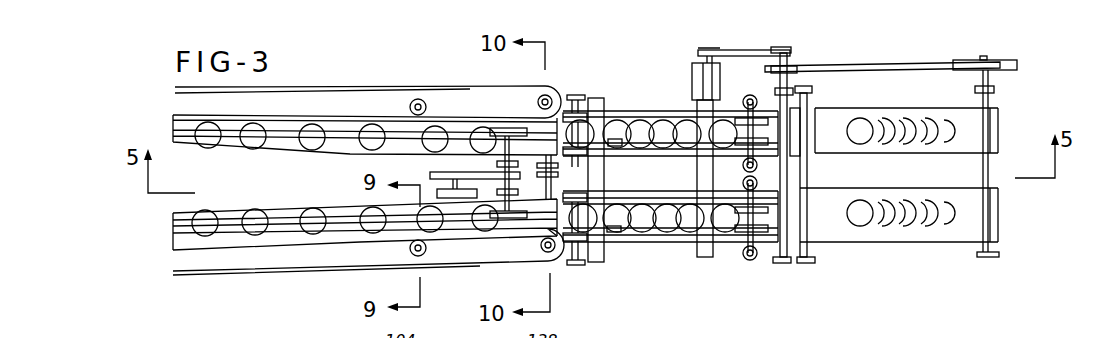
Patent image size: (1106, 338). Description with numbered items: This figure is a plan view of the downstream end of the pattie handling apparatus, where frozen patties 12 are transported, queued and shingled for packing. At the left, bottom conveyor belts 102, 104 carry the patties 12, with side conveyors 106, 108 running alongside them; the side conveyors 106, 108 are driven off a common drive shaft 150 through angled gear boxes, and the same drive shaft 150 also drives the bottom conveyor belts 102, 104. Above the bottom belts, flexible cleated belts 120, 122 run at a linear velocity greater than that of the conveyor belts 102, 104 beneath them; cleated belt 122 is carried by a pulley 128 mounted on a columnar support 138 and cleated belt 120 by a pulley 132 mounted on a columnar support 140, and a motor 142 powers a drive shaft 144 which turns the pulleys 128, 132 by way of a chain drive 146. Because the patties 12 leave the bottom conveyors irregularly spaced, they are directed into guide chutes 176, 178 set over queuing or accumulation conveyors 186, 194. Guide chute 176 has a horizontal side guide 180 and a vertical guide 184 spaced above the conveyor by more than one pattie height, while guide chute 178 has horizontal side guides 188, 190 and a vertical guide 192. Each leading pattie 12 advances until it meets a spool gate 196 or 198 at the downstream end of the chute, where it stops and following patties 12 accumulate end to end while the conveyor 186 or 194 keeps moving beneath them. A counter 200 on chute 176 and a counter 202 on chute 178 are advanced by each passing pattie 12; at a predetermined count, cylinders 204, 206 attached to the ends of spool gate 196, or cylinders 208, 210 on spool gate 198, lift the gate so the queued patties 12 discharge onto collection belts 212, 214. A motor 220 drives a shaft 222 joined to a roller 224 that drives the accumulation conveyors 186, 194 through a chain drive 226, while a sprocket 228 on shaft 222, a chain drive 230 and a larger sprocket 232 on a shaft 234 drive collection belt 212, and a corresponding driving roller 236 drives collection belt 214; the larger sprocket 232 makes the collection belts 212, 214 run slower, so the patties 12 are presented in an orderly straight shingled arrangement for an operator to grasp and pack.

The patties 12 is at (352, 211).
The conveyor belt 102 is at (288, 147).
The conveyor belt 104 is at (283, 217).
The side conveyor 106 is at (343, 87).
The side conveyor 108 is at (340, 247).
The cleated belt 120 is at (352, 132).
The cleated belt 122 is at (400, 230).
The pulley 128 is at (515, 240).
The pulley 132 is at (527, 130).
The columnar support 138 is at (515, 195).
The columnar support 140 is at (520, 155).
The motor 142 is at (455, 199).
The drive shaft 144 is at (515, 140).
The chain drive 146 is at (487, 174).
The drive shaft 150 is at (586, 160).
The guide chute 176 is at (628, 104).
The guide chute 178 is at (627, 248).
The horizontal side guide 180 is at (637, 110).
The vertical guide 184 is at (645, 113).
The queuing or accumulation conveyor 186 is at (667, 143).
The horizontal side guide 188 is at (645, 203).
The horizontal side guide 190 is at (642, 237).
The vertical guide 192 is at (665, 218).
The queuing or accumulation conveyor 194 is at (775, 237).
The spool gate 196 is at (768, 121).
The spool gate 198 is at (770, 222).
The counter 200 is at (618, 112).
The counter 202 is at (616, 247).
The cylinder 204 is at (757, 103).
The cylinder 206 is at (766, 163).
The cylinder 208 is at (773, 180).
The cylinder 210 is at (757, 260).
The collection belt 212 is at (998, 110).
The collection belt 214 is at (988, 213).
The motor 220 is at (695, 68).
The shaft 222 is at (790, 63).
The roller 224 is at (797, 158).
The chain drive 226 is at (747, 52).
The sprocket 228 is at (793, 72).
The chain drive 230 is at (907, 66).
The sprocket 232 is at (1002, 60).
The shaft 234 is at (990, 80).
The driving roller 236 is at (995, 249).